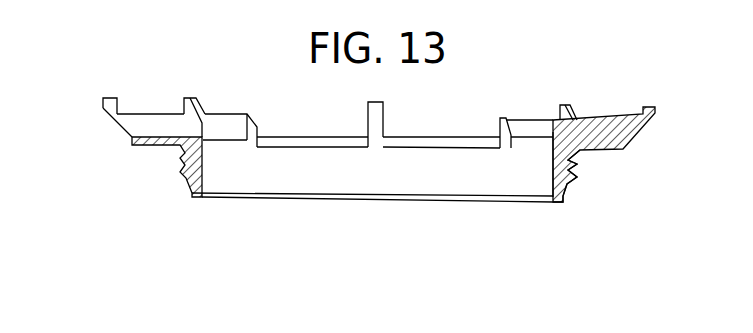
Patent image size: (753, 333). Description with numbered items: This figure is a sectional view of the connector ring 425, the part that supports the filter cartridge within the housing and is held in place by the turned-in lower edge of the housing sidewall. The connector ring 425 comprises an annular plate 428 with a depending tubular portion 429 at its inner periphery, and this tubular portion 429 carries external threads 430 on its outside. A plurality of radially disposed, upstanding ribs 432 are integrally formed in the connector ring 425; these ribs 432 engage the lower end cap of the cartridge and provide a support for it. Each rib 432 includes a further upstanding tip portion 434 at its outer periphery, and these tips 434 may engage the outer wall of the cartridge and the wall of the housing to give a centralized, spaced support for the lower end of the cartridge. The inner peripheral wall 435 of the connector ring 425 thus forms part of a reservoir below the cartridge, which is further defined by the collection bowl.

The connector ring 425 is at (235, 240).
The annular plate 428 is at (157, 147).
The depending tubular portion 429 is at (565, 205).
The external threads 430 is at (576, 177).
The upstanding ribs 432 is at (607, 118).
The upstanding tip portion 434 is at (115, 98).
The inner peripheral wall 435 is at (553, 172).